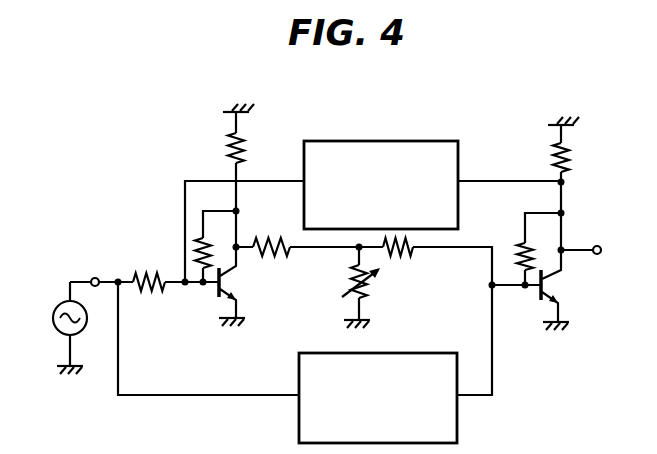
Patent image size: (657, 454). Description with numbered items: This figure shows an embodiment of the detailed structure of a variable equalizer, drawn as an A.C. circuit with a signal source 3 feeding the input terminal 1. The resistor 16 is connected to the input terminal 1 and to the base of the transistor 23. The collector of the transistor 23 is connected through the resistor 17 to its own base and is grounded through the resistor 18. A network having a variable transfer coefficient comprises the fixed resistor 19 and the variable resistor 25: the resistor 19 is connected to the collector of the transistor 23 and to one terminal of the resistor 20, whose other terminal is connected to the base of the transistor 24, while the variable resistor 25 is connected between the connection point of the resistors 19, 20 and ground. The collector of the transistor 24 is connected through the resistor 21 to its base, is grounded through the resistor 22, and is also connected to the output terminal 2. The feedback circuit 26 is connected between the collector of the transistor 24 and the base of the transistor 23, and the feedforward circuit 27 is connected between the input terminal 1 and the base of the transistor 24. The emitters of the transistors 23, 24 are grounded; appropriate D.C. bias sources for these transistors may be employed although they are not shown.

The input terminal 1 is at (96, 278).
The output terminal 2 is at (601, 249).
The signal source 3 is at (55, 308).
The fixed resistor 16 is at (152, 291).
The fixed resistor 17 is at (199, 238).
The fixed resistor 18 is at (244, 148).
The fixed resistor 19 is at (276, 240).
The fixed resistor 20 is at (409, 255).
The fixed resistor 21 is at (517, 245).
The fixed resistor 22 is at (571, 156).
The transistor 23 is at (230, 290).
The transistor 24 is at (553, 276).
The variable resistor 25 is at (366, 290).
The feedback circuit 26 is at (383, 141).
The feedforward circuit 27 is at (299, 368).